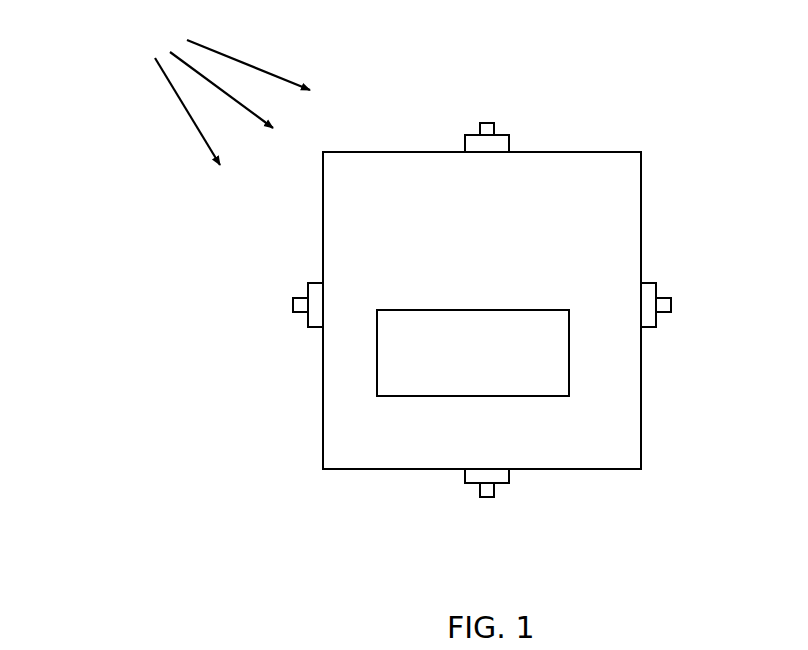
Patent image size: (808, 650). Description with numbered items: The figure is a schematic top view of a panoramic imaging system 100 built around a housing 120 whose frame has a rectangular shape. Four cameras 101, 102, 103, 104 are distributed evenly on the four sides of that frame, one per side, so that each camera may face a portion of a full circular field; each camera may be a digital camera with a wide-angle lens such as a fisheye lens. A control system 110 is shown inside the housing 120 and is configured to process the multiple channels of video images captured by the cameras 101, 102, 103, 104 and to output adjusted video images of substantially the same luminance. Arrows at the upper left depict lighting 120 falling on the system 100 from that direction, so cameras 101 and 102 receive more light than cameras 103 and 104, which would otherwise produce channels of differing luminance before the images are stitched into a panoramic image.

The panoramic imaging system 100 is at (722, 116).
The camera 101 is at (487, 122).
The camera 102 is at (285, 305).
The camera 103 is at (487, 498).
The camera 104 is at (681, 305).
The control system 110 is at (473, 353).
The housing 120 is at (641, 222).